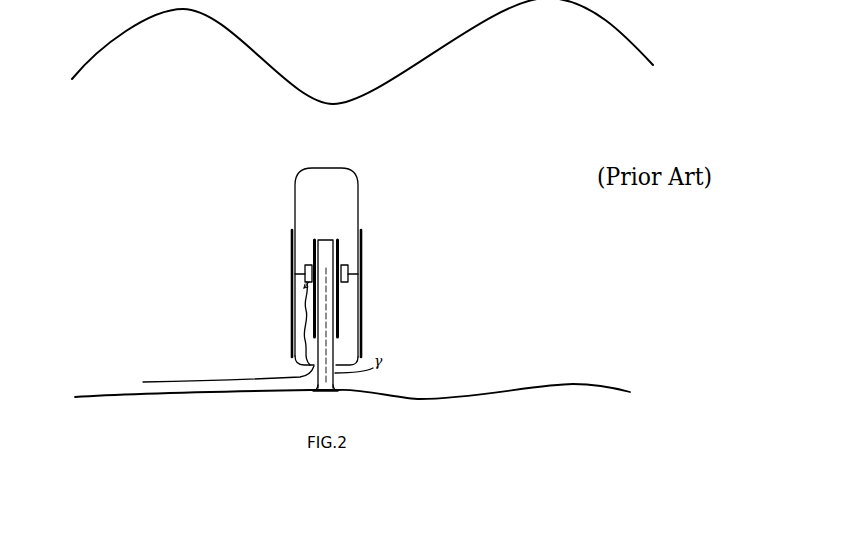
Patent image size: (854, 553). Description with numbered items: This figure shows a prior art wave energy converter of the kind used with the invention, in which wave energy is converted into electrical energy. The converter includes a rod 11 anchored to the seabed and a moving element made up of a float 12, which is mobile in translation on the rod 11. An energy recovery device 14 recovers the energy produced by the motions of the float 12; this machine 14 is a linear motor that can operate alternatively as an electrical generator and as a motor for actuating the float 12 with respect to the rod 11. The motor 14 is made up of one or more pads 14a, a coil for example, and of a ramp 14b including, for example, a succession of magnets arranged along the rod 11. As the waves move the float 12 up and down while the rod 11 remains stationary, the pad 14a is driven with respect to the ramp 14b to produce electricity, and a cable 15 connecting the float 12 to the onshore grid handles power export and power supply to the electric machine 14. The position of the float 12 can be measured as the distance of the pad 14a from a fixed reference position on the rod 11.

The rod 11 is at (337, 383).
The float 12 is at (348, 195).
The energy recovery device 14 is at (360, 293).
The pad 14a is at (348, 278).
The ramp 14b is at (340, 334).
The cable 15 is at (163, 380).